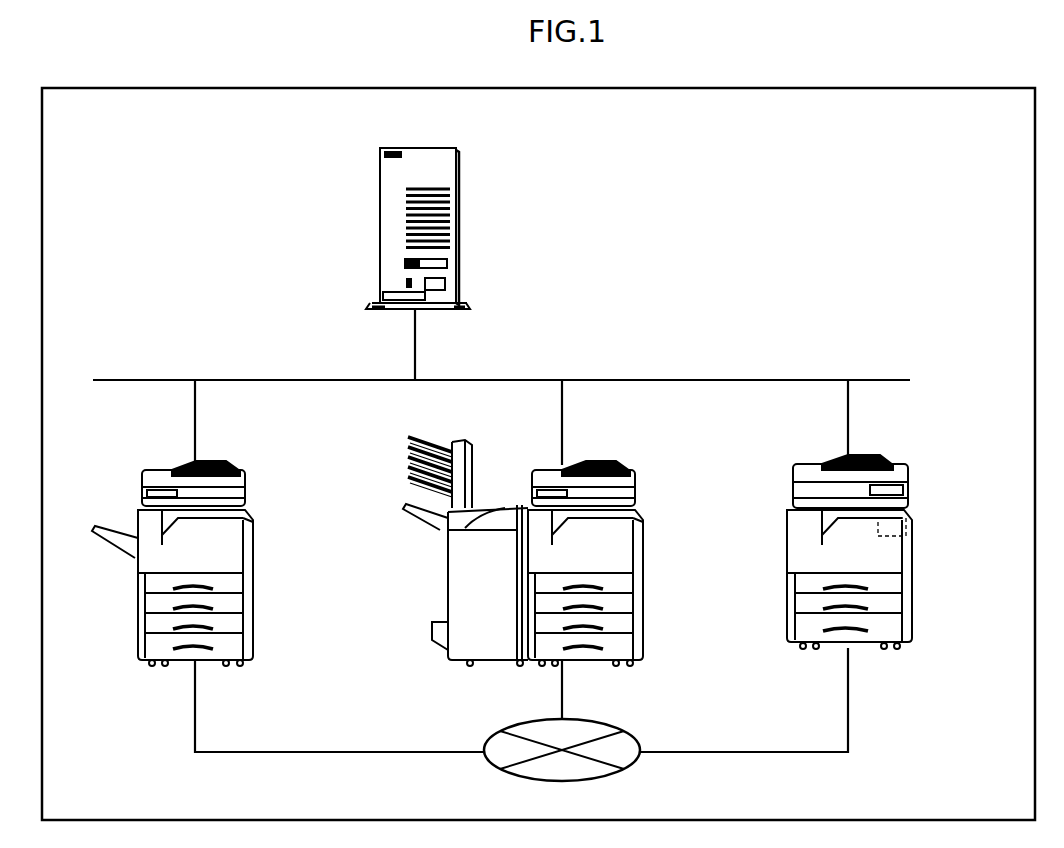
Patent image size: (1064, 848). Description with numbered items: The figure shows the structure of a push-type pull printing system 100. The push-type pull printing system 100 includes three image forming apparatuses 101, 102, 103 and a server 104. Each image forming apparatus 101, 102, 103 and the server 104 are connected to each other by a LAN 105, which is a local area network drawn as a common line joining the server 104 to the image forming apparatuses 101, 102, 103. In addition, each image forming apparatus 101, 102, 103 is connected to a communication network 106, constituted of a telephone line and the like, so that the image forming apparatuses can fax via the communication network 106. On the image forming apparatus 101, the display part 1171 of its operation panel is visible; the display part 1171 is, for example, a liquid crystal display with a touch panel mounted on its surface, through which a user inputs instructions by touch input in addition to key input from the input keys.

The push-type pull printing system 100 is at (846, 88).
The image forming apparatus 101 is at (894, 540).
The image forming apparatus 102 is at (615, 465).
The image forming apparatus 103 is at (225, 468).
The server 104 is at (440, 148).
The LAN 105 is at (252, 380).
The communication network 106 is at (597, 720).
The display part 1171 is at (905, 490).